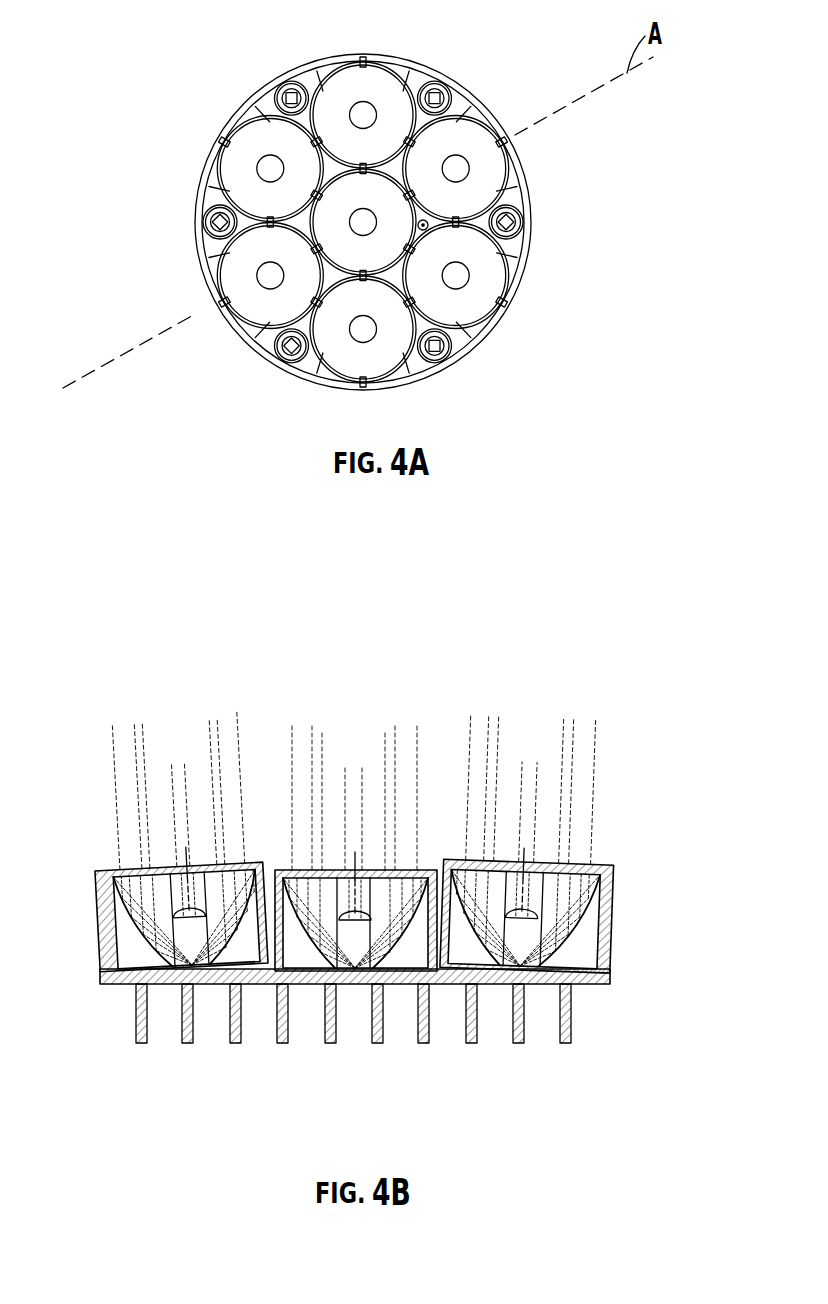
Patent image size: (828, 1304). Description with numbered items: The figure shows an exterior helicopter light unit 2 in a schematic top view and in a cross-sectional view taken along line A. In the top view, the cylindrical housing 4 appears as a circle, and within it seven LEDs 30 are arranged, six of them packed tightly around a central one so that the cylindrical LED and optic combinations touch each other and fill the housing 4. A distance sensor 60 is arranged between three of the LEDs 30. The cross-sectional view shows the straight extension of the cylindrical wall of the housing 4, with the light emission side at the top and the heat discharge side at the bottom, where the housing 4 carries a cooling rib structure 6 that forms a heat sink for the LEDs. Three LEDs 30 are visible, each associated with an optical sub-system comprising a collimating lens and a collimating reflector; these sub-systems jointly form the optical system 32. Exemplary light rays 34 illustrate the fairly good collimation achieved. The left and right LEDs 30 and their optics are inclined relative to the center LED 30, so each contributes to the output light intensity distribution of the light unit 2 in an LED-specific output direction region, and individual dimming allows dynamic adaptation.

In FIG. 4A, the exterior helicopter light unit 2 is at (440, 242).
In FIG. 4B, the exterior helicopter light unit 2 is at (397, 877).
In FIG. 4A, the housing 4 is at (290, 373).
In FIG. 4B, the housing 4 is at (608, 950).
In FIG. 4B, the cooling rib structure 6 is at (570, 1035).
In FIG. 4A, the LED 30 is at (357, 210).
In FIG. 4B, the LED 30 is at (192, 968).
In FIG. 4B, the optical system 32 is at (145, 928).
In FIG. 4B, the light rays 34 is at (122, 798).
In FIG. 4A, the distance sensor 60 is at (428, 219).